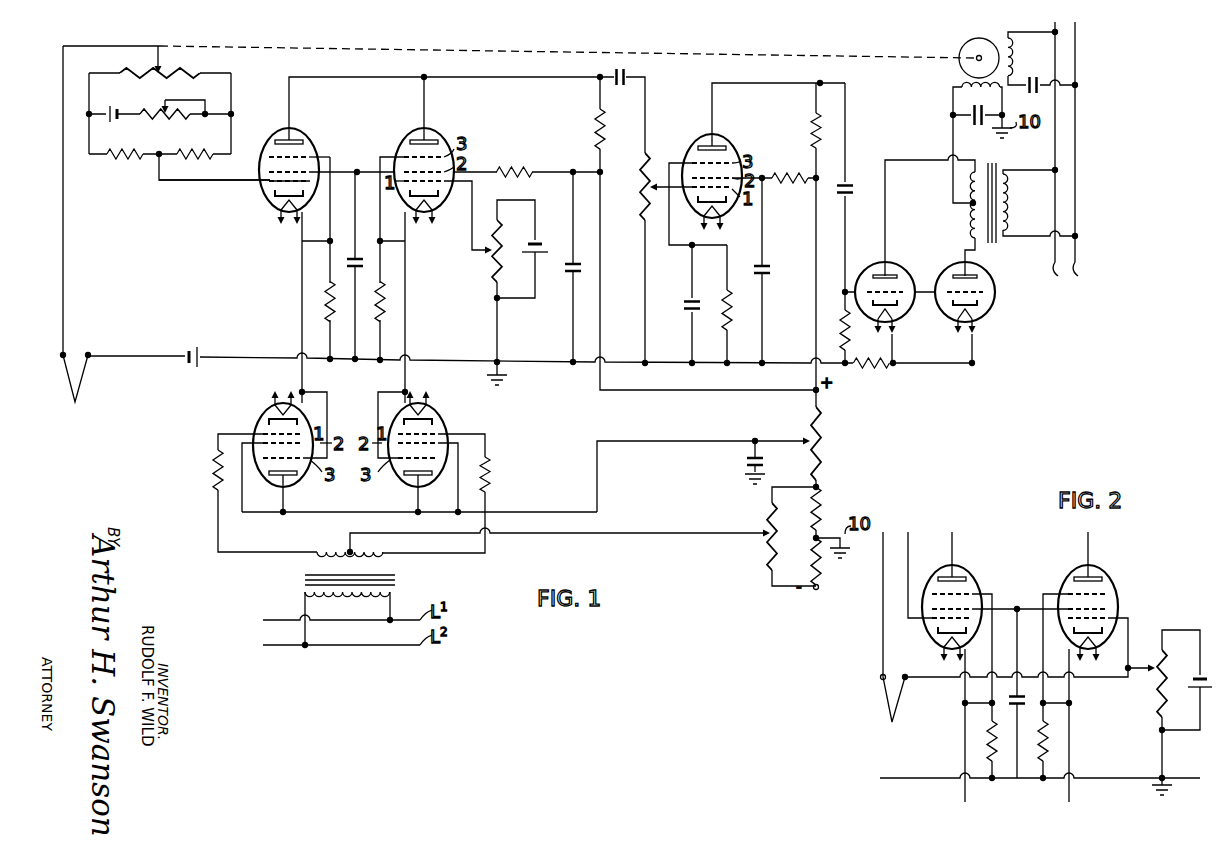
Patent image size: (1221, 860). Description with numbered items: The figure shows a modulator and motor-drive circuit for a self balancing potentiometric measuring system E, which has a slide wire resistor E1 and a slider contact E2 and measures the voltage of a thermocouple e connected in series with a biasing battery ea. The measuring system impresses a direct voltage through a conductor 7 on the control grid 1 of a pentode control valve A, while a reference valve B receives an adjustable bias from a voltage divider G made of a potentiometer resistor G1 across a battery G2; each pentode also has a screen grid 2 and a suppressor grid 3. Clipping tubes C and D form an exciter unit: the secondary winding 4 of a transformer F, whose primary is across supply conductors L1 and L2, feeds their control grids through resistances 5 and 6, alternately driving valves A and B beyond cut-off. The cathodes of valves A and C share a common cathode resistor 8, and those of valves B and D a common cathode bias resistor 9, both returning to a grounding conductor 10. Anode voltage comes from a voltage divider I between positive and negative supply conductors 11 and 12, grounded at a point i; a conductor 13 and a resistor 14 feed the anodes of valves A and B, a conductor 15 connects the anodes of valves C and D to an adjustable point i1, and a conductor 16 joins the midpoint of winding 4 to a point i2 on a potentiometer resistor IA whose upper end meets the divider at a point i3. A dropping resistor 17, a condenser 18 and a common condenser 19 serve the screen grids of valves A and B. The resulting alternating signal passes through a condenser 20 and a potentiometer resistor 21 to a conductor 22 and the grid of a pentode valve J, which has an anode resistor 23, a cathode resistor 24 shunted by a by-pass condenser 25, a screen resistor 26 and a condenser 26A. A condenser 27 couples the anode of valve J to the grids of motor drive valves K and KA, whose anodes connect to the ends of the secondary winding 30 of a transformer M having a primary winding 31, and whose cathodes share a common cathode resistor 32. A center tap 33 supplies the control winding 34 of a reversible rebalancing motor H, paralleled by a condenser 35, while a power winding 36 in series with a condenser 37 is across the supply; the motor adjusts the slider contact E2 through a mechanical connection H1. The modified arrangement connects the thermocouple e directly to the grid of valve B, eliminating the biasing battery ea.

In FIG. 1, the control valve A is at (306, 118).
In FIG. 2, the control valve A is at (974, 546).
In FIG. 1, the reference valve B is at (402, 122).
In FIG. 2, the reference valve B is at (1064, 550).
In FIG. 1, the clipping tube C is at (243, 406).
In FIG. 1, the clipping tube D is at (455, 418).
In FIG. 1, the self balancing potentiometric measuring system E is at (184, 101).
In FIG. 1, the slide wire resistor E1 is at (120, 74).
In FIG. 1, the slider contact E2 is at (162, 58).
In FIG. 1, the transformer F is at (305, 590).
In FIG. 1, the voltage divider G is at (511, 292).
In FIG. 2, the voltage divider G is at (1182, 678).
In FIG. 1, the potentiometer resistor G1 is at (482, 250).
In FIG. 2, the potentiometer resistor G1 is at (1176, 650).
In FIG. 1, the battery G2 is at (543, 250).
In FIG. 2, the battery G2 is at (1200, 706).
In FIG. 1, the reversible rebalancing motor H is at (968, 40).
In FIG. 1, the mechanical connection H1 is at (875, 55).
In FIG. 1, the voltage divider or potentiometer resistor I is at (848, 437).
In FIG. 1, the potentiometer resistor IA is at (751, 510).
In FIG. 1, the pentode valve J is at (686, 128).
In FIG. 1, the electronic motor drive valve K is at (896, 250).
In FIG. 1, the electronic motor drive valve KA is at (992, 318).
In FIG. 1, the transformer M is at (995, 253).
In FIG. 1, the alternating supply conductor L1 is at (1065, 156).
In FIG. 1, the alternating supply conductor L2 is at (1086, 156).
In FIG. 1, the thermocouple e is at (90, 375).
In FIG. 2, the thermocouple e is at (897, 700).
In FIG. 1, the biasing battery ea is at (188, 352).
In FIG. 1, the grounded point i is at (818, 536).
In FIG. 1, the adjustable point i1 is at (807, 446).
In FIG. 1, the adjustable point i2 is at (763, 538).
In FIG. 1, the point i3 is at (825, 488).
In FIG. 1, the control grid 1 is at (312, 181).
In FIG. 1, the screen grid 2 is at (267, 172).
In FIG. 1, the suppressor grid 3 is at (269, 157).
In FIG. 1, the secondary winding 4 is at (336, 545).
In FIG. 1, the resistance 5 is at (212, 466).
In FIG. 1, the resistance 6 is at (490, 475).
In FIG. 1, the conductor 7 is at (205, 180).
In FIG. 2, the conductor 7 is at (908, 548).
In FIG. 1, the common cathode resistor 8 is at (325, 286).
In FIG. 2, the common cathode resistor 8 is at (988, 728).
In FIG. 1, the common cathode bias resistor 9 is at (384, 272).
In FIG. 2, the common cathode bias resistor 9 is at (1056, 722).
In FIG. 1, the grounding conductor 10 is at (365, 360).
In FIG. 1, the positive supply conductor 11 is at (822, 395).
In FIG. 1, the negative supply conductor 12 is at (822, 588).
In FIG. 1, the conductor 13 is at (675, 393).
In FIG. 1, the resistor 14 is at (596, 126).
In FIG. 1, the conductor 15 is at (640, 441).
In FIG. 1, the conductor 16 is at (535, 535).
In FIG. 1, the dropping resistor 17 is at (505, 165).
In FIG. 1, the condenser 18 is at (565, 275).
In FIG. 1, the common condenser 19 is at (352, 245).
In FIG. 2, the common condenser 19 is at (1022, 705).
In FIG. 1, the condenser 20 is at (628, 66).
In FIG. 1, the potentiometer resistor 21 is at (638, 190).
In FIG. 1, the conductor 22 is at (654, 185).
In FIG. 1, the resistor 23 is at (812, 129).
In FIG. 1, the resistor 24 is at (730, 322).
In FIG. 1, the by-pass condenser 25 is at (686, 304).
In FIG. 1, the resistor 26 is at (778, 170).
In FIG. 1, the condenser 26A is at (770, 262).
In FIG. 1, the condenser 27 is at (851, 178).
In FIG. 1, the secondary winding 30 is at (967, 222).
In FIG. 1, the primary winding 31 is at (1018, 200).
In FIG. 1, the common cathode resistor 32 is at (872, 368).
In FIG. 1, the center tap 33 is at (951, 170).
In FIG. 1, the control winding 34 is at (954, 91).
In FIG. 1, the condenser 35 is at (978, 128).
In FIG. 1, the power winding 36 is at (1022, 46).
In FIG. 1, the condenser 37 is at (1038, 104).